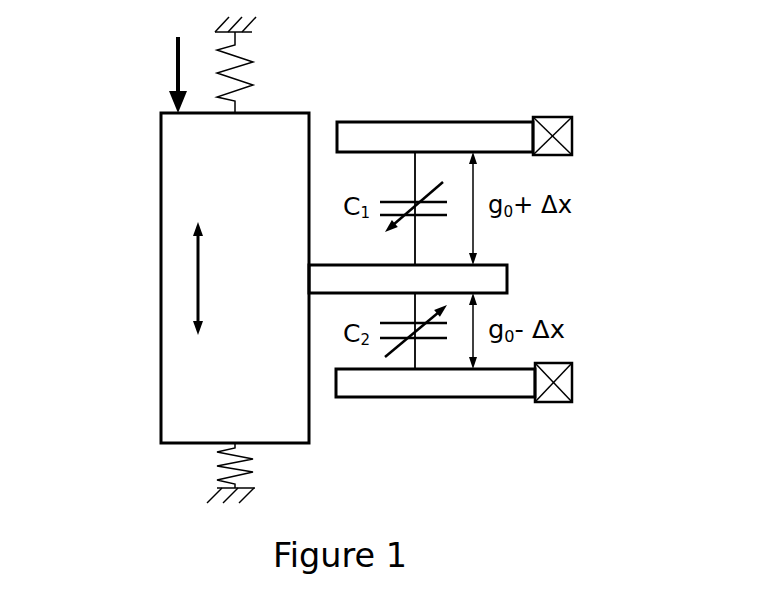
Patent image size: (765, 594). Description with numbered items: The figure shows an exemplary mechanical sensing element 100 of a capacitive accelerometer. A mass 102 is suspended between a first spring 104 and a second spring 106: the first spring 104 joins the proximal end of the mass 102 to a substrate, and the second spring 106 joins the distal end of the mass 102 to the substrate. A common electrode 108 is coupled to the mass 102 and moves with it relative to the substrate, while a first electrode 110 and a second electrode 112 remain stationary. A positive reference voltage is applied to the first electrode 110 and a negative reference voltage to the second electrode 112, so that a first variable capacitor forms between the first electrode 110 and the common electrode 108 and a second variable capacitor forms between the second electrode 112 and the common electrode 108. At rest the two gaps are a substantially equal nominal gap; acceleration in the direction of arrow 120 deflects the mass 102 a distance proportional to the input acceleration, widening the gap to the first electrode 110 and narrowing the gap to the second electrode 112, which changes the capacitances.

The mechanical sensing element 100 is at (456, 58).
The mass 102 is at (161, 232).
The first spring 104 is at (270, 472).
The second spring 106 is at (258, 74).
The common electrode 108 is at (507, 265).
The first electrode 110 is at (480, 128).
The second electrode 112 is at (455, 392).
The arrow 120 is at (152, 75).